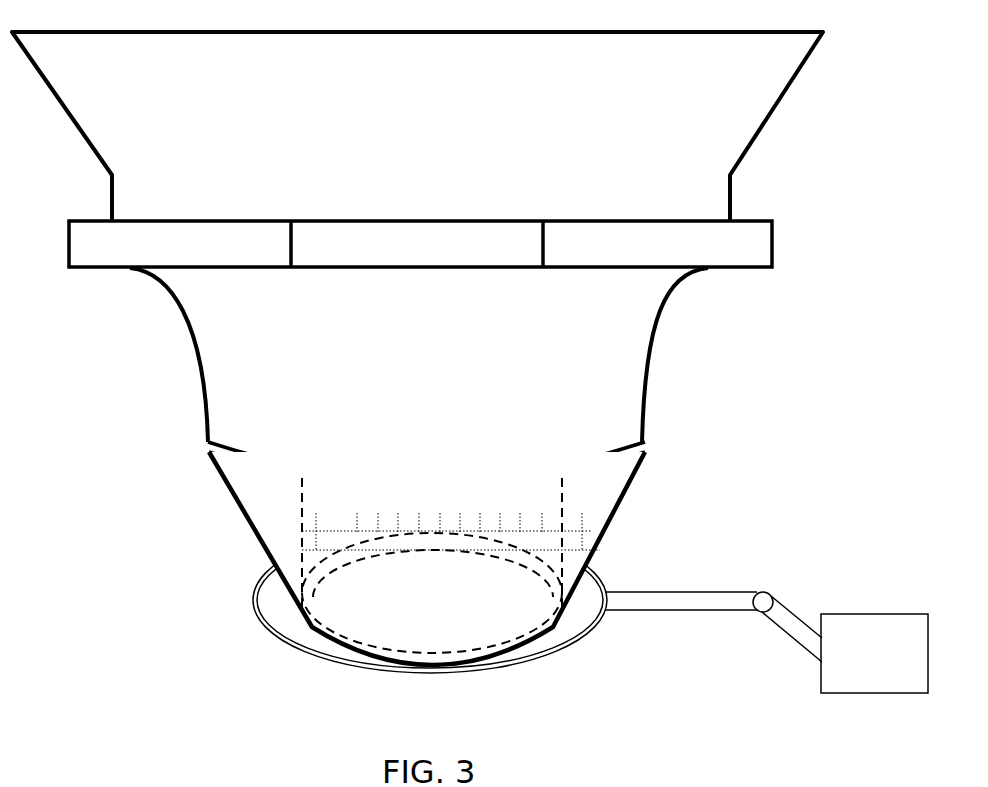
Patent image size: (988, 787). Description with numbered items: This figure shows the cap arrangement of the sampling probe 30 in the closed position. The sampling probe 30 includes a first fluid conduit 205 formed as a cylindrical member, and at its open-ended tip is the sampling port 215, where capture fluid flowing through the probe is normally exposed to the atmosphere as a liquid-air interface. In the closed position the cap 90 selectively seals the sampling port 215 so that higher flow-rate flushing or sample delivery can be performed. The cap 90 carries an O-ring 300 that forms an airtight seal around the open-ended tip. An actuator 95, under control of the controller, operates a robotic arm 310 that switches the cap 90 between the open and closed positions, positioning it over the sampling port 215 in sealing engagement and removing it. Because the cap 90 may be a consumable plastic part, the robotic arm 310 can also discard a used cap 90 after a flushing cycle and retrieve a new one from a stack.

The sampling probe 30 is at (742, 357).
The cap 90 is at (260, 623).
The actuator 95 is at (888, 614).
The first fluid conduit 205 is at (302, 530).
The sampling port 215 is at (468, 625).
The O-ring 300 is at (533, 575).
The robotic arm 310 is at (658, 610).